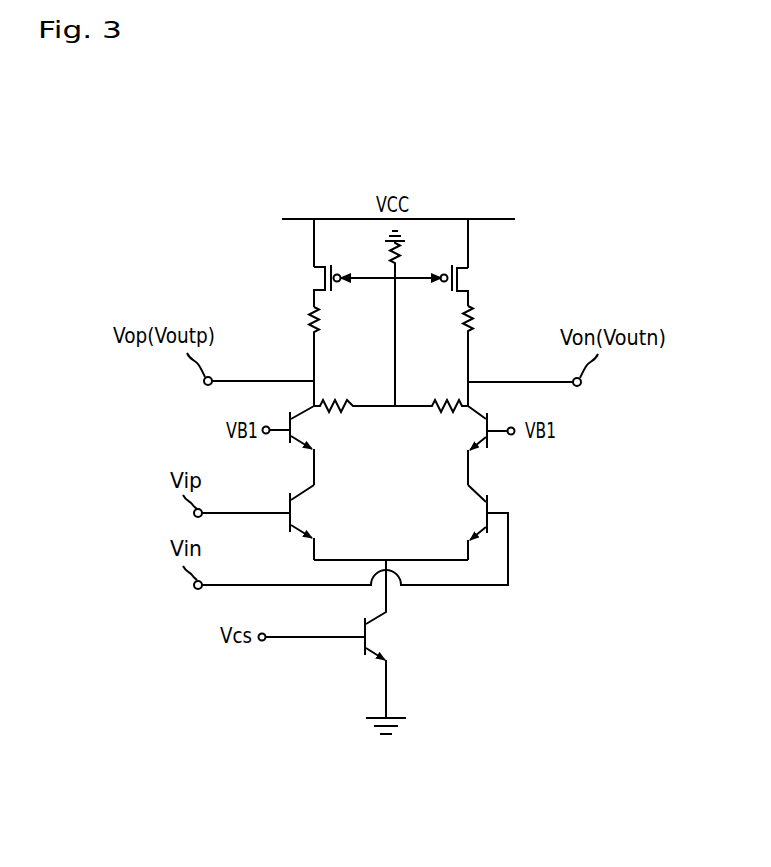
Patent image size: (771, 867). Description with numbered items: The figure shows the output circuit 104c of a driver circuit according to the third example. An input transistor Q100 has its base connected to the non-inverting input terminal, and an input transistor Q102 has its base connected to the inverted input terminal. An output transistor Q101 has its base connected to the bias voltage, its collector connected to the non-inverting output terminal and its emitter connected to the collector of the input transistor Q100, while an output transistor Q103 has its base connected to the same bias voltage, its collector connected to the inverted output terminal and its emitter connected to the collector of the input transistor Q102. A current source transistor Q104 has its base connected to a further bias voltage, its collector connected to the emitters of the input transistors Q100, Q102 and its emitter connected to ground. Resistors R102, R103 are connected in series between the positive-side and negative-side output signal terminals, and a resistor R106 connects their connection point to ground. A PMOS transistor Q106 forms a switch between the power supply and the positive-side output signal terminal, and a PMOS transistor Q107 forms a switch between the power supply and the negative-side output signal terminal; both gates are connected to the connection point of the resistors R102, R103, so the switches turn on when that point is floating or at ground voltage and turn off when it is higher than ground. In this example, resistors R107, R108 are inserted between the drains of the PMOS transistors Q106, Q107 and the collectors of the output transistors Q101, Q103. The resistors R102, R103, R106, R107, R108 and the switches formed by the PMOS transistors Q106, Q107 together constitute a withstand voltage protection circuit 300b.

The output circuit 104c is at (248, 193).
The withstand voltage protection circuit 300b is at (547, 262).
The input transistor Q100 is at (322, 522).
The output transistor Q101 is at (322, 445).
The input transistor Q102 is at (453, 522).
The output transistor Q103 is at (453, 445).
The current source transistor Q104 is at (401, 647).
The PMOS transistor Q106 is at (299, 278).
The PMOS transistor Q107 is at (482, 278).
The resistor R102 is at (354, 390).
The resistor R103 is at (431, 390).
The resistor R106 is at (371, 318).
The resistor R107 is at (287, 344).
The resistor R108 is at (495, 344).